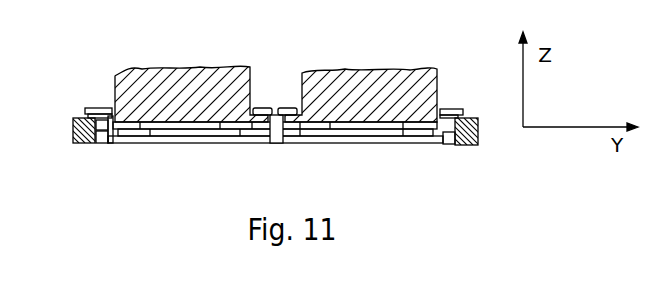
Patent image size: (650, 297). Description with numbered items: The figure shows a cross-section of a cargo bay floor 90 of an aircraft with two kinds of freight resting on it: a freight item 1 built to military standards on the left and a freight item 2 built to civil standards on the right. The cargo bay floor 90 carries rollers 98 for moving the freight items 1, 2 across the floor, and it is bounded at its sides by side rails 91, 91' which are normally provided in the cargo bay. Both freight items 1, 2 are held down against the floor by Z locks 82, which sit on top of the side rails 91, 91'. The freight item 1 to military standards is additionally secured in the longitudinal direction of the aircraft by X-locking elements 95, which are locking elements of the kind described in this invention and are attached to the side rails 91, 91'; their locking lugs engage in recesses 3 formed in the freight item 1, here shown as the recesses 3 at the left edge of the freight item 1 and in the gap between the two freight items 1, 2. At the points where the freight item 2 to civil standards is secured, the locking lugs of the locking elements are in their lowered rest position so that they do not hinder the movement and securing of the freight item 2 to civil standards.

The freight item 1 is at (186, 95).
The freight item 2 is at (360, 96).
The recess 3 is at (271, 143).
The Z lock 82 is at (103, 106).
The cargo bay floor 90 is at (385, 144).
The side rail 91 is at (480, 148).
The side rail 91' is at (72, 135).
The X-locking element 95 is at (101, 146).
The roller 98 is at (320, 136).